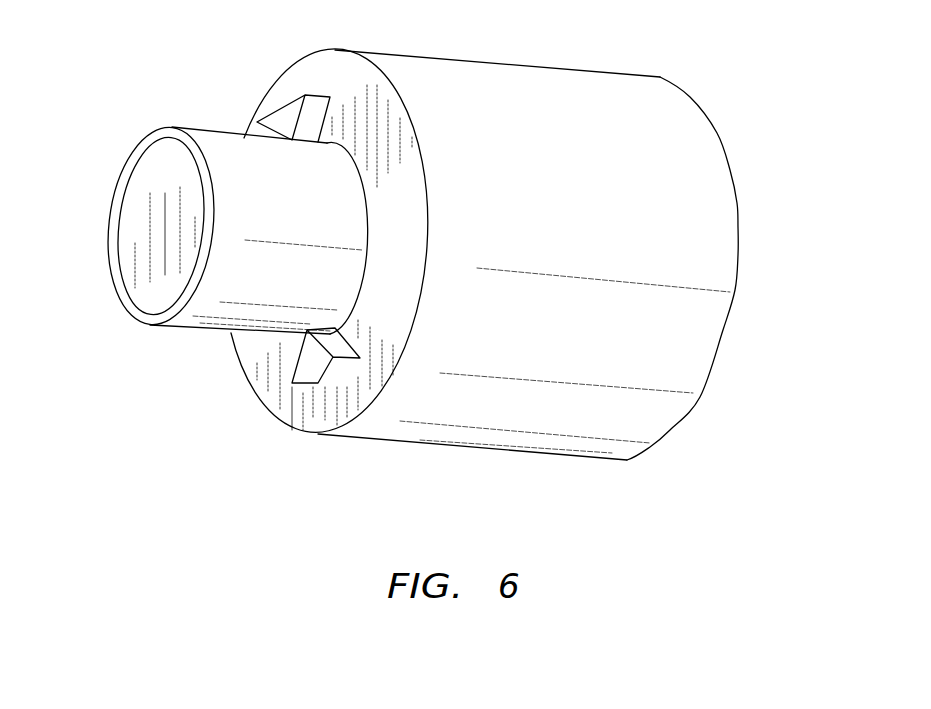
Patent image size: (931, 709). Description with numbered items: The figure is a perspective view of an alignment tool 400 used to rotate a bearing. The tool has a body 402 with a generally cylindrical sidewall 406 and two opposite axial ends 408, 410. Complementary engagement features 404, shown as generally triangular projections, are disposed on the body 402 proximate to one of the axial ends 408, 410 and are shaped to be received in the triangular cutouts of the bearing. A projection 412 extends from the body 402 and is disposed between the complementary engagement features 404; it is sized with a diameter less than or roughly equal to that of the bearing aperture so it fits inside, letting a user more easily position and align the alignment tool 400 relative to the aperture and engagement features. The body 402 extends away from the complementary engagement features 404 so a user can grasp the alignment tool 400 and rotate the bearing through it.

The alignment tool 400 is at (126, 50).
The body 402 is at (677, 170).
The complementary engagement feature 404 is at (245, 362).
The generally cylindrical sidewall 406 is at (687, 310).
The axial end 410 is at (737, 227).
The axial end 408 is at (302, 372).
The projection 412 is at (128, 238).